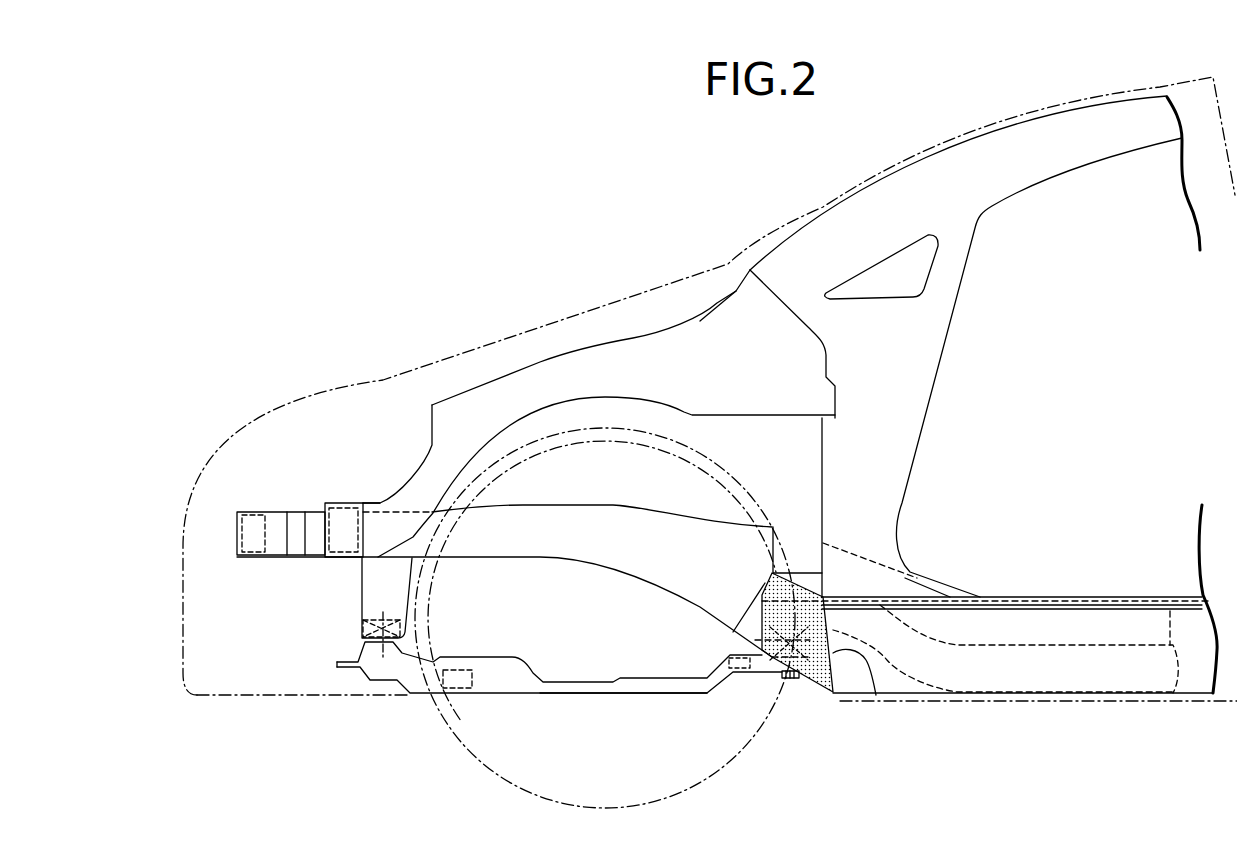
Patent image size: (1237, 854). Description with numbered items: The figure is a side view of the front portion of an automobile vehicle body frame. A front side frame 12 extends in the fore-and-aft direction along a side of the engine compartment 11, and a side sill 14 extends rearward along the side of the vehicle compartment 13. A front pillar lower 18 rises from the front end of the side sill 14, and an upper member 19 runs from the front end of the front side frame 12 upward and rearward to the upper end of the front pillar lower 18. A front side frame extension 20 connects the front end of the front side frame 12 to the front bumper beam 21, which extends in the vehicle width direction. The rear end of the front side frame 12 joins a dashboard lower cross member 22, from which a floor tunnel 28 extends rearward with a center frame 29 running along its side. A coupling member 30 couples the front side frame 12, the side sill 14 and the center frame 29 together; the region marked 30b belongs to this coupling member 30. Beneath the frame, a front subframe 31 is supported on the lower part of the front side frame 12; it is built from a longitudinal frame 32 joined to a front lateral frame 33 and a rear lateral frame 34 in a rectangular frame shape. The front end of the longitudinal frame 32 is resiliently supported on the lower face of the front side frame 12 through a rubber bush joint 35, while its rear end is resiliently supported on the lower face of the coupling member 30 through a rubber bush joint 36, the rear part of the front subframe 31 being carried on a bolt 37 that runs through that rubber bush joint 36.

The engine compartment 11 is at (595, 643).
The front side frame 12 is at (560, 552).
The vehicle compartment 13 is at (1092, 473).
The side sill 14 is at (1188, 682).
The front pillar lower 18 is at (913, 420).
The upper member 19 is at (540, 372).
The front side frame extension 20 is at (297, 517).
The front bumper beam 21 is at (237, 532).
The dashboard lower cross member 22 is at (810, 572).
The floor tunnel 28 is at (1032, 597).
The center frame 29 is at (1119, 640).
The coupling member 30 is at (776, 657).
The gusset rear edge 30b is at (835, 652).
The front subframe 31 is at (566, 694).
The longitudinal frame 32 is at (623, 690).
The front lateral frame 33 is at (450, 716).
The rear lateral frame 34 is at (738, 680).
The rubber bush joint 35 is at (363, 622).
The rubber bush joint 36 is at (755, 642).
The bolt 37 is at (793, 680).